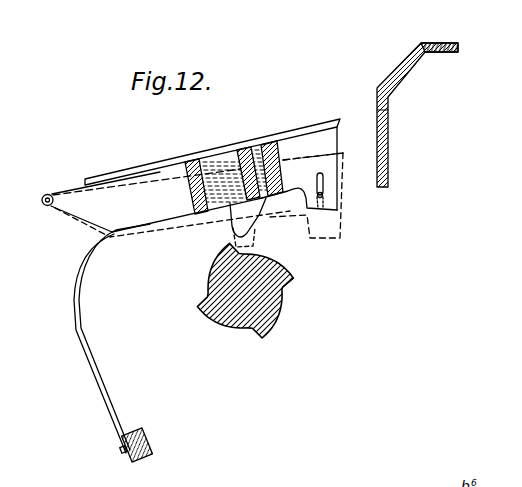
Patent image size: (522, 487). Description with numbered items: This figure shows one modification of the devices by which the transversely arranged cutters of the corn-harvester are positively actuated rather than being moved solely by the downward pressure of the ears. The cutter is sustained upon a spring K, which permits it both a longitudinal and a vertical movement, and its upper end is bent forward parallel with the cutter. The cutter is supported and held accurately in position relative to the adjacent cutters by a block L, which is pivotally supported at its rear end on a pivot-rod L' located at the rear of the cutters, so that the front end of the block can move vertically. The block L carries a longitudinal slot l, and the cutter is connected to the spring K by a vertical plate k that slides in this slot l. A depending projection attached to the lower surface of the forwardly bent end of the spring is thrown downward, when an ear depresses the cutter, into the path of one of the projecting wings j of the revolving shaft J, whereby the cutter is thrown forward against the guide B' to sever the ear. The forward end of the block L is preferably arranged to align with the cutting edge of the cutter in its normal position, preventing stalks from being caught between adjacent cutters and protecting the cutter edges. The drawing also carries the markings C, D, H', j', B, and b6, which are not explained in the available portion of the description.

The casing bar C is at (258, 143).
The vertical plate k is at (216, 186).
The longitudinal slot l is at (254, 173).
The block L is at (170, 204).
The pivot-rod L' is at (46, 187).
The spring K is at (80, 332).
The plate D is at (343, 153).
The hook H' is at (229, 223).
The revolving shaft J is at (251, 292).
The projecting wings j is at (238, 294).
The rotor tooth j' is at (294, 279).
The bracket B is at (417, 115).
The guide B' is at (397, 118).
The bracket flange b6 is at (399, 62).